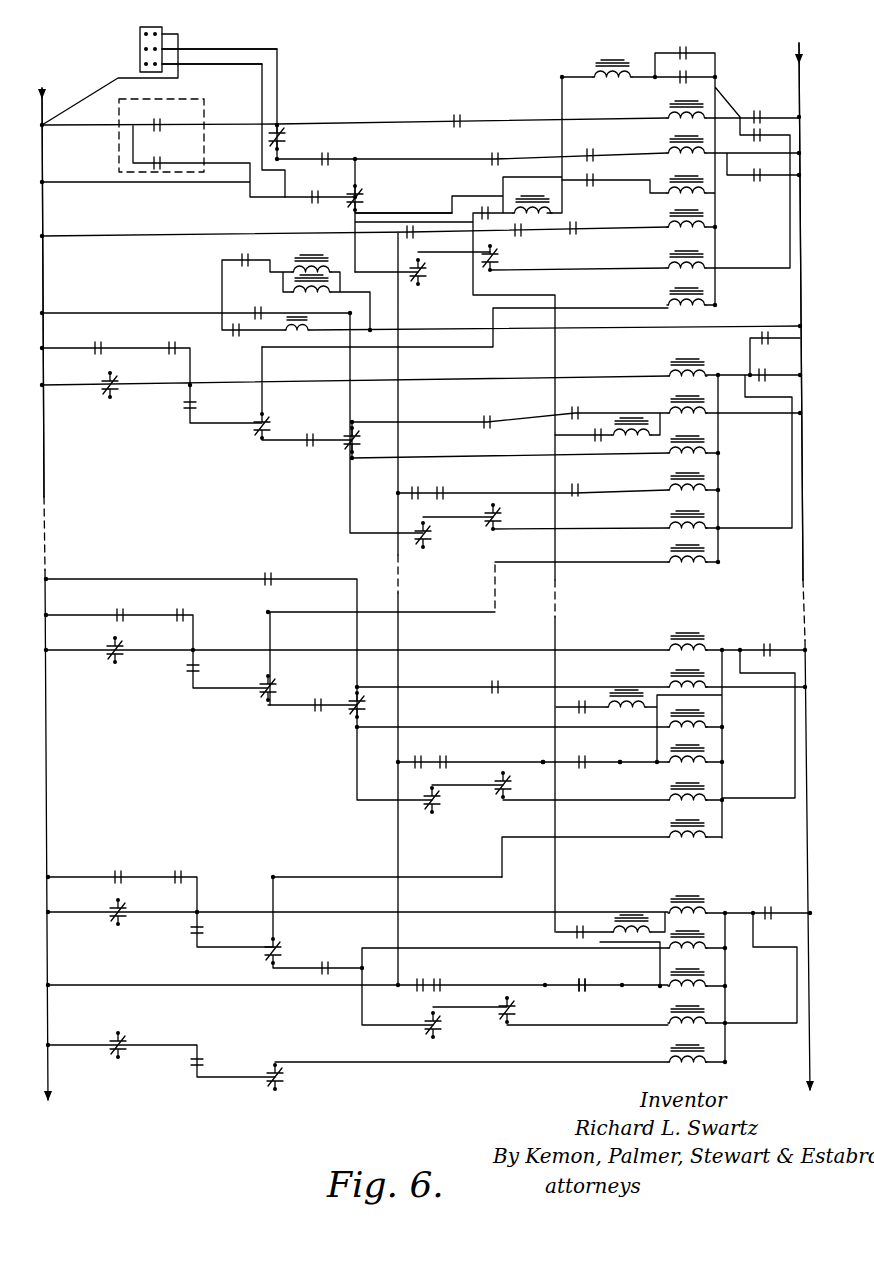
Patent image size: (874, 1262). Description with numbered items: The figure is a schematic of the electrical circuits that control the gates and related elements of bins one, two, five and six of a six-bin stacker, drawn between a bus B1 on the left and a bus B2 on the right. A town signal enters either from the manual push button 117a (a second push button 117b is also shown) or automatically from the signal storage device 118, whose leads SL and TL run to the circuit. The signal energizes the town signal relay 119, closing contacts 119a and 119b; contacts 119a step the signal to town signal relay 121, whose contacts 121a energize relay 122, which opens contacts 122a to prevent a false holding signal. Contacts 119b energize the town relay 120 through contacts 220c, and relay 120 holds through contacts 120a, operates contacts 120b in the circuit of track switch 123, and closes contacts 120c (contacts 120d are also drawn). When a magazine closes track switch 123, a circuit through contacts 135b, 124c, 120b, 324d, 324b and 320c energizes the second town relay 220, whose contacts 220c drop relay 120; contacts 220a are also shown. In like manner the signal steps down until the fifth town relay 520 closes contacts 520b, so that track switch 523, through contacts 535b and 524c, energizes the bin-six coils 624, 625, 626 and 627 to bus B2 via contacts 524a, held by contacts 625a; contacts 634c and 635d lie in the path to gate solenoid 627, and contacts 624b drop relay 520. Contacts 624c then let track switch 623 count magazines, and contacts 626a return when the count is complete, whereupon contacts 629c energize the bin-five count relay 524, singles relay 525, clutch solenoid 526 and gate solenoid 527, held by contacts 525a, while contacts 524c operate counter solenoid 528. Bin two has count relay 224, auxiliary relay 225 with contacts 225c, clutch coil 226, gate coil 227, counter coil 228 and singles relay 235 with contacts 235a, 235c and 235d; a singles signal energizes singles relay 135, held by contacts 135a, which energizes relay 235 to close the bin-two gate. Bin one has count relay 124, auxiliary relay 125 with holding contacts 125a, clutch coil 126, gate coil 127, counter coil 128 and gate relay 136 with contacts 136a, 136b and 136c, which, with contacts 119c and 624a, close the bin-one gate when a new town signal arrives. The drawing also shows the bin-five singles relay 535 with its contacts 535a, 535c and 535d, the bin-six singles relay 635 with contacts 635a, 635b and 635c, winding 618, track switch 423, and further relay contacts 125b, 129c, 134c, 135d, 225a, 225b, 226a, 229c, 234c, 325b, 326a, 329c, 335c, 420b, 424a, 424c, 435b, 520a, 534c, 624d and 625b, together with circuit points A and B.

The signal storage device 118 is at (138, 50).
The town push button switch 117a is at (160, 152).
The push button switch 117b is at (160, 112).
The town signal relay 119 is at (311, 255).
The contacts of relay 119 119a is at (260, 251).
The contacts of relay 119 119b is at (320, 188).
The contacts of relay 119 119c is at (750, 332).
The town relay winding 120 is at (671, 145).
The contacts of relay 120 120a is at (327, 151).
The contacts of relay 120 120b is at (308, 450).
The contacts of relay 120 120c is at (699, 71).
The contacts of relay 120 120d is at (772, 168).
The town signal relay 121 is at (310, 300).
The contacts of relay 121 121a is at (237, 338).
The town signal relay 122 is at (292, 340).
The contacts of relay 122 122a is at (310, 208).
The track switch 123 is at (125, 385).
The count relay winding 124 is at (670, 178).
The contacts of relay 124 124c is at (275, 428).
The auxiliary relay winding 125 is at (518, 192).
The holding contacts of relay 125 125a is at (760, 387).
The contacts of relay 125 125b is at (420, 975).
The counter clutch solenoid coil 126 is at (715, 222).
The gate operating magnet coil 127 is at (715, 260).
The counter count solenoid coil 128 is at (715, 298).
The contacts of relay 129 129c is at (440, 978).
The contacts of relay 134 134c is at (425, 278).
The singles relay winding 135 is at (666, 112).
The contacts of relay 135 135a is at (285, 140).
The contacts of relay 135 135b is at (211, 407).
The contacts of relay 135 135d is at (498, 260).
The gate relay 136 is at (590, 74).
The contacts of relay 136 136a is at (693, 48).
The contacts of relay 136 136b is at (775, 130).
The contacts of relay 136 136c is at (590, 190).
The town relay winding 220 is at (668, 402).
The contacts of relay 220 220a is at (245, 304).
The contacts of relay 220 220c is at (592, 147).
The count relay winding 224 is at (497, 152).
The auxiliary relay winding 225 is at (624, 419).
The contacts of relay 225 225a is at (590, 462).
The contacts of relay 225 225b is at (410, 240).
The contacts of relay 225 225c is at (365, 197).
The counter clutch solenoid coil 226 is at (712, 486).
The contacts of relay 226 226a is at (578, 222).
The gate operating magnet coil 227 is at (712, 522).
The counter count solenoid coil 228 is at (712, 557).
The contacts of relay 229 229c is at (518, 240).
The contacts of relay 234 234c is at (432, 540).
The singles relay winding 235 is at (660, 368).
The contacts of relay 235 235a is at (188, 340).
The contacts of relay 235 235c is at (460, 113).
The contacts of relay 235 235d is at (512, 517).
The contacts of relay 320 320c is at (572, 405).
The contacts of relay 324 324b is at (463, 413).
The contacts of relay 324 324d is at (365, 442).
The contacts of relay 325 325b is at (417, 485).
The contacts of relay 326 326a is at (580, 482).
The contacts of relay 329 329c is at (445, 488).
The contacts of relay 335 335c is at (103, 340).
The contacts of relay 420 420b is at (323, 695).
The track switch 423 is at (131, 650).
The contacts of relay 424 424a is at (750, 643).
The contacts of relay 424 424c is at (285, 688).
The contacts of relay 435 435b is at (214, 671).
The town relay winding 520 is at (665, 665).
The contacts of relay 520 520a is at (272, 572).
The contacts of relay 520 520b is at (316, 958).
The track switch 523 is at (133, 912).
The count relay winding 524 is at (712, 722).
The contacts of relay 524 524a is at (779, 905).
The contacts of relay 524 524c is at (288, 940).
The singles relay winding 525 is at (648, 690).
The contacts of relay 525 525a is at (586, 700).
The counter clutch solenoid coil 526 is at (712, 757).
The gate operating magnet coil 527 is at (712, 794).
The counter count solenoid coil 528 is at (712, 832).
The contacts of relay 534 534c is at (440, 804).
The singles relay winding 535 is at (712, 640).
The contacts of relay 535 535a is at (182, 608).
The contacts of relay 535 535b is at (218, 933).
The contacts of relay 535 535c is at (95, 869).
The contacts of relay 535 535d is at (522, 785).
The relay winding 618 is at (712, 1057).
The track switch 623 is at (133, 1045).
The count relay winding 624 is at (712, 944).
The contacts of relay 624 624a is at (755, 106).
The contacts of relay 624 624b is at (497, 679).
The contacts of relay 624 624c is at (288, 1085).
The contacts of relay 624 624d is at (372, 703).
The auxiliary relay winding 625 is at (632, 924).
The contacts of relay 625 625a is at (575, 932).
The contacts of relay 625 625b is at (420, 754).
The counter clutch solenoid coil 626 is at (715, 982).
The contacts of relay 626 626a is at (588, 750).
The gate solenoid coil 627 is at (712, 1018).
The contacts of relay 629 629c is at (448, 755).
The contacts of relay 634 634c is at (442, 1028).
The singles relay winding 635 is at (712, 904).
The contacts of relay 635 635a is at (163, 869).
The contacts of relay 635 635b is at (210, 1060).
The contacts of relay 635 635c is at (115, 606).
The contacts of relay 635 635d is at (518, 1010).
The bus B1 is at (39, 282).
The bus B2 is at (793, 302).
The signal lead SL is at (232, 47).
The signal lead TL is at (238, 76).
The circuit point A is at (619, 754).
The circuit point B is at (543, 752).